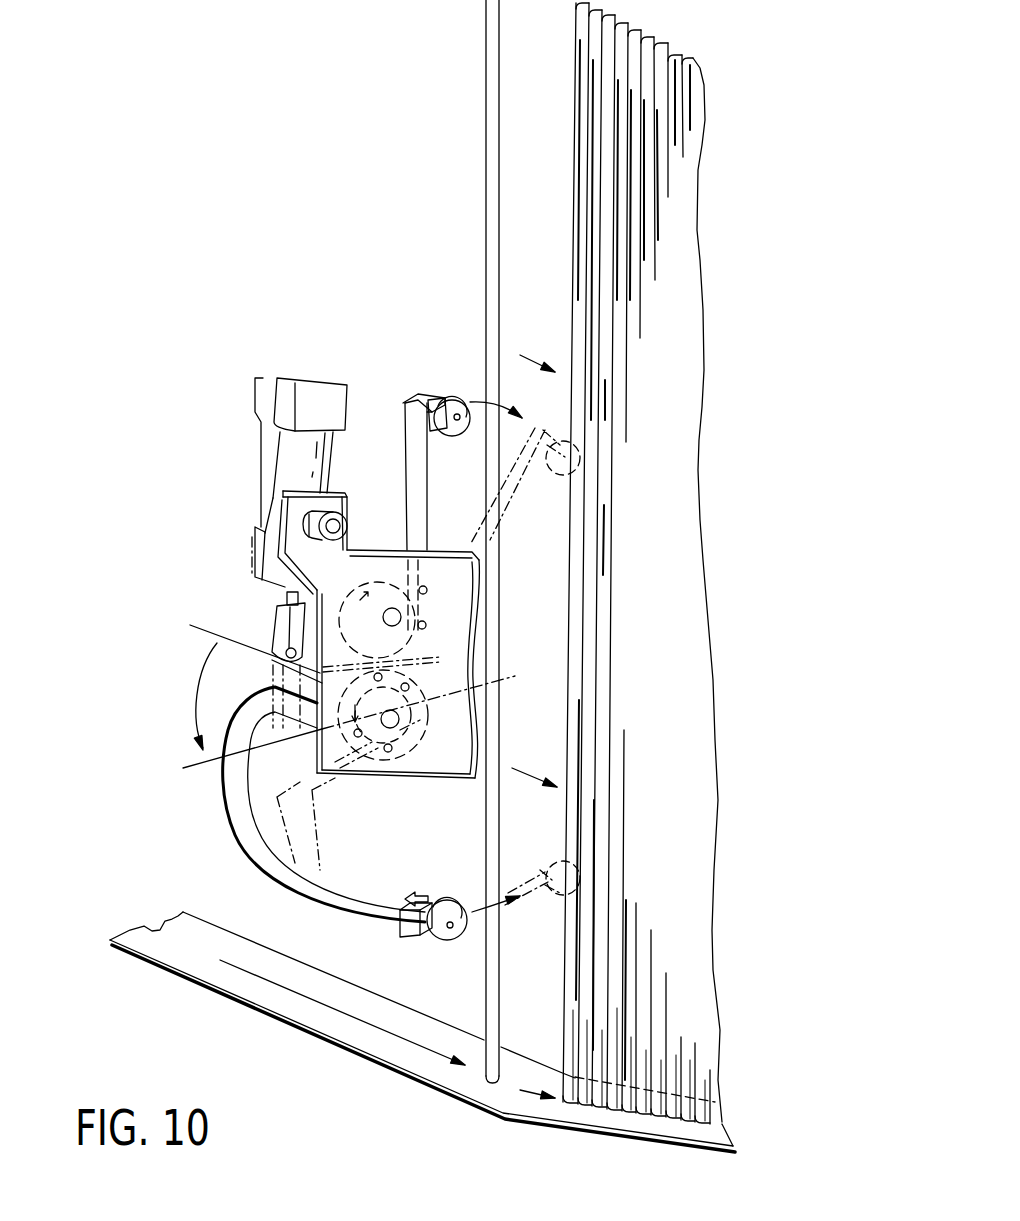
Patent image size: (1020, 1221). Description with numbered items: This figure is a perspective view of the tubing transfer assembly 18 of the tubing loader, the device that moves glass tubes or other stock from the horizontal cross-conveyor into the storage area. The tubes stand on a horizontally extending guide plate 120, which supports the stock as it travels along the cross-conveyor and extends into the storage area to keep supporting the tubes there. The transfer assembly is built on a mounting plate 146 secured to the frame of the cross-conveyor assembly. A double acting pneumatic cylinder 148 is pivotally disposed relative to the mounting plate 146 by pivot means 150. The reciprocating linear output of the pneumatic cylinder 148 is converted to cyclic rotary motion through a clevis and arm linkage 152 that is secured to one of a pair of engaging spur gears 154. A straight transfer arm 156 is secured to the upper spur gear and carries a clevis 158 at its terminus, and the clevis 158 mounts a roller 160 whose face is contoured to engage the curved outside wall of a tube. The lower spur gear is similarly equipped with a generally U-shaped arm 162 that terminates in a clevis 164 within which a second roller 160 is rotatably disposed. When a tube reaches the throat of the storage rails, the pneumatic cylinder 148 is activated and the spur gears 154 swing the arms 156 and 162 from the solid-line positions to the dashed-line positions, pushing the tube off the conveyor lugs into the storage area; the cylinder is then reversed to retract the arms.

The tubing transfer assembly 18 is at (255, 318).
The horizontal guide plate 120 is at (343, 1050).
The mounting plate 146 is at (418, 762).
The double acting pneumatic cylinder 148 is at (325, 378).
The pivot means 150 is at (340, 516).
The clevis and arm linkage 152 is at (280, 642).
The spur gears 154 is at (367, 696).
The straight transfer arm 156 is at (428, 490).
The clevis 158 is at (411, 395).
The roller 160 is at (440, 395).
The U-shaped arm 162 is at (392, 915).
The clevis 164 is at (425, 932).